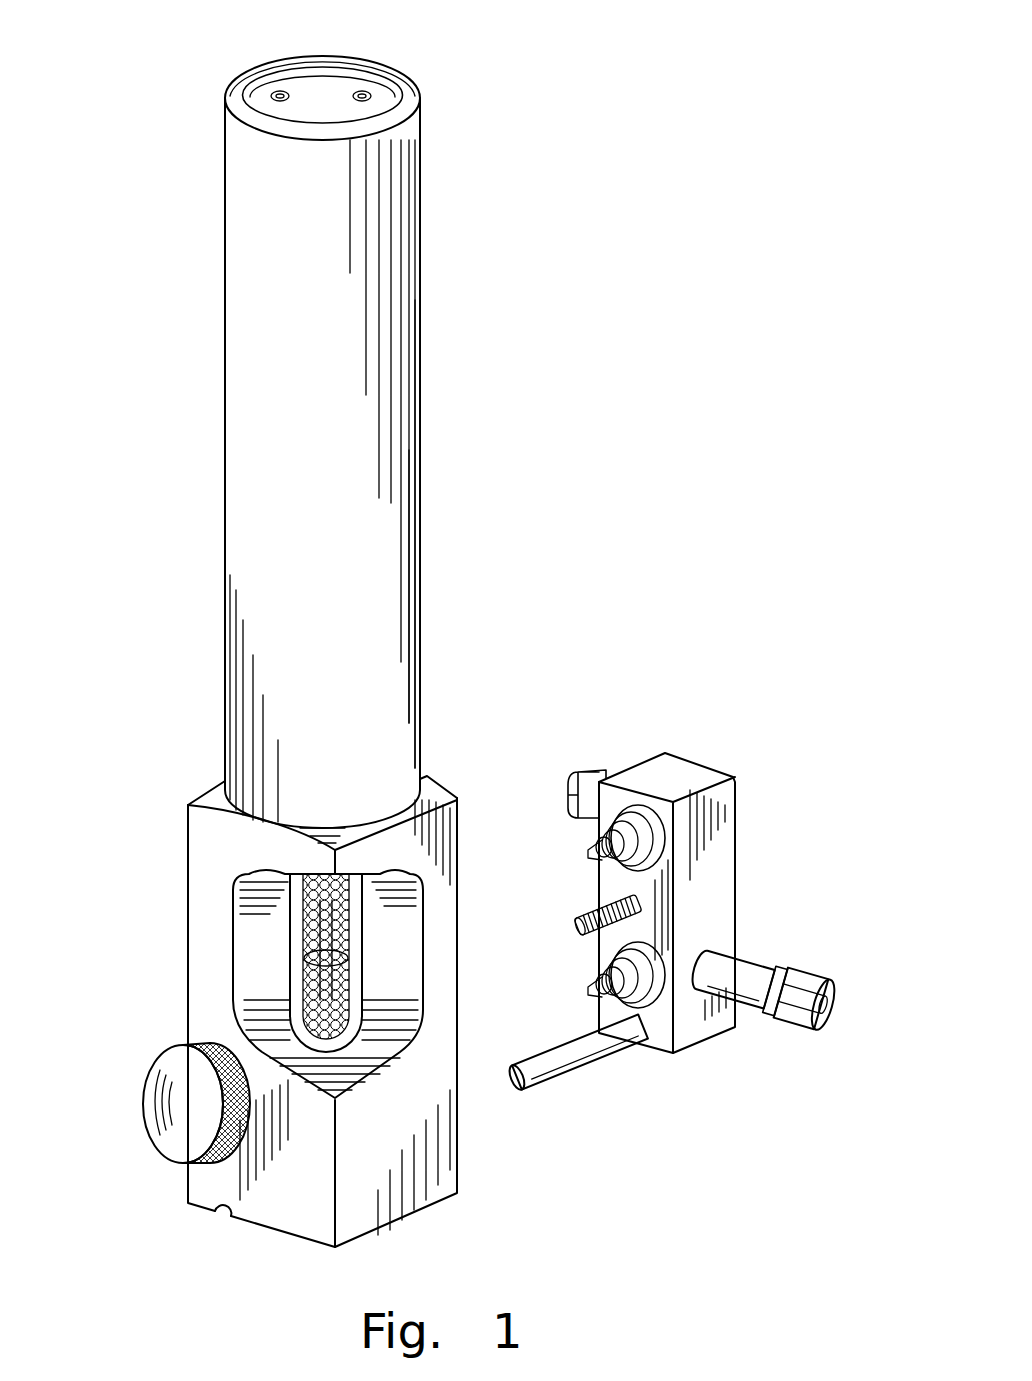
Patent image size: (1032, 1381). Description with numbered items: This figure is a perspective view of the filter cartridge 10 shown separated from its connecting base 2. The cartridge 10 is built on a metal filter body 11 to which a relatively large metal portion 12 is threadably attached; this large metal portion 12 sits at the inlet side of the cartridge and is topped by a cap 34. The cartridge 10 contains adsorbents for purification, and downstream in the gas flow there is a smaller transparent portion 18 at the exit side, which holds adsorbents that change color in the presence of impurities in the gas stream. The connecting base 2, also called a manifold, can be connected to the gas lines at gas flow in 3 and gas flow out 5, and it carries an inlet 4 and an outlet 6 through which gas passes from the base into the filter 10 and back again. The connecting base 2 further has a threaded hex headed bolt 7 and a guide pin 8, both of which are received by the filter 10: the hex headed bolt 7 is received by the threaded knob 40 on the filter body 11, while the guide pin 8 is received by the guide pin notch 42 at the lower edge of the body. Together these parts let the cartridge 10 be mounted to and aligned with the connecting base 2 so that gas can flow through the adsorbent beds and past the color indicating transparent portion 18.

The filter cartridge 10 is at (600, 267).
The relatively large metal portion 12 is at (248, 209).
The cap 34 is at (327, 90).
The filter body 11 is at (216, 852).
The smaller transparent portion 18 is at (297, 967).
The threaded knob 40 is at (173, 1128).
The guide pin notch 42 is at (225, 1218).
The connecting base 2 is at (717, 912).
The gas flow in 3 is at (585, 782).
The inlet 4 is at (592, 852).
The gas flow out 5 is at (815, 972).
The outlet 6 is at (590, 990).
The threaded hex headed bolt 7 is at (585, 918).
The guide pin 8 is at (540, 1072).